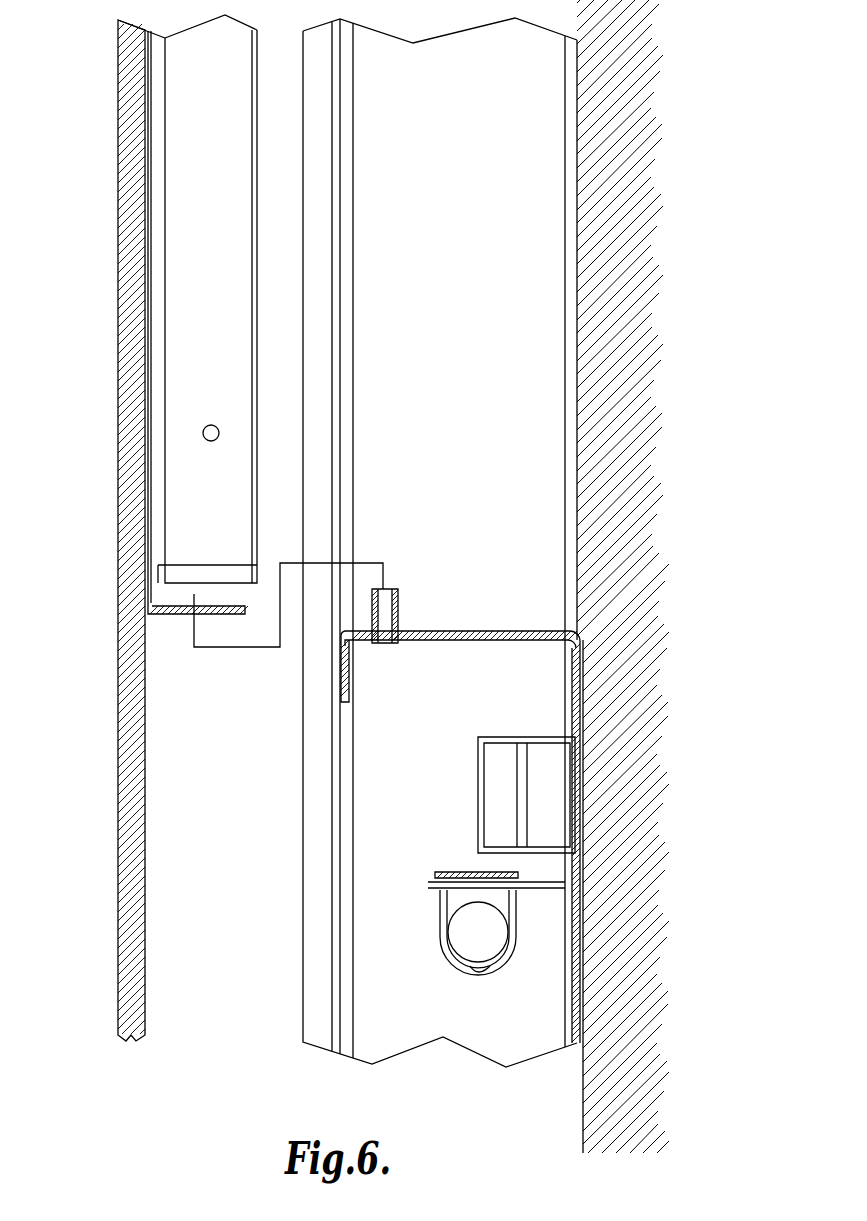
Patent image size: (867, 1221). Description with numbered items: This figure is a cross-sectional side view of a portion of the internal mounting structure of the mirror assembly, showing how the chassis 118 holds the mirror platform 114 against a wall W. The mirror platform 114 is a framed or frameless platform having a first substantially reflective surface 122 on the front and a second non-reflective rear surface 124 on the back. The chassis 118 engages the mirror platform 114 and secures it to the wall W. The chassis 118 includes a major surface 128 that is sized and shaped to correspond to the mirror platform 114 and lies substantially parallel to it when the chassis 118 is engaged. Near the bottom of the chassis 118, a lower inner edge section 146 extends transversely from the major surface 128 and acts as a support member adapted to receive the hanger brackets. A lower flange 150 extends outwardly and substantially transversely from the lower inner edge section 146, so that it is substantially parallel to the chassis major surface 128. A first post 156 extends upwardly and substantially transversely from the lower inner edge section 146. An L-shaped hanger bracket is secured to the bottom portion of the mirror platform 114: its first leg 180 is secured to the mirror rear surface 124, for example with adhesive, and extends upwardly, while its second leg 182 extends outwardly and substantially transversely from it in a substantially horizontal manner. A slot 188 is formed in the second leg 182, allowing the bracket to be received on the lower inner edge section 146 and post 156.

The wall W is at (640, 45).
The mirror platform 114 is at (108, 1044).
The chassis 118 is at (462, 1072).
The first substantially reflective surface 122 is at (118, 868).
The second non-reflective rear surface 124 is at (145, 878).
The major surface 128 is at (572, 678).
The lower inner edge section 146 is at (472, 632).
The lower flange 150 is at (342, 683).
The first post 156 is at (399, 592).
The first leg 180 is at (148, 296).
The second leg 182 is at (238, 614).
The slot 188 is at (190, 614).